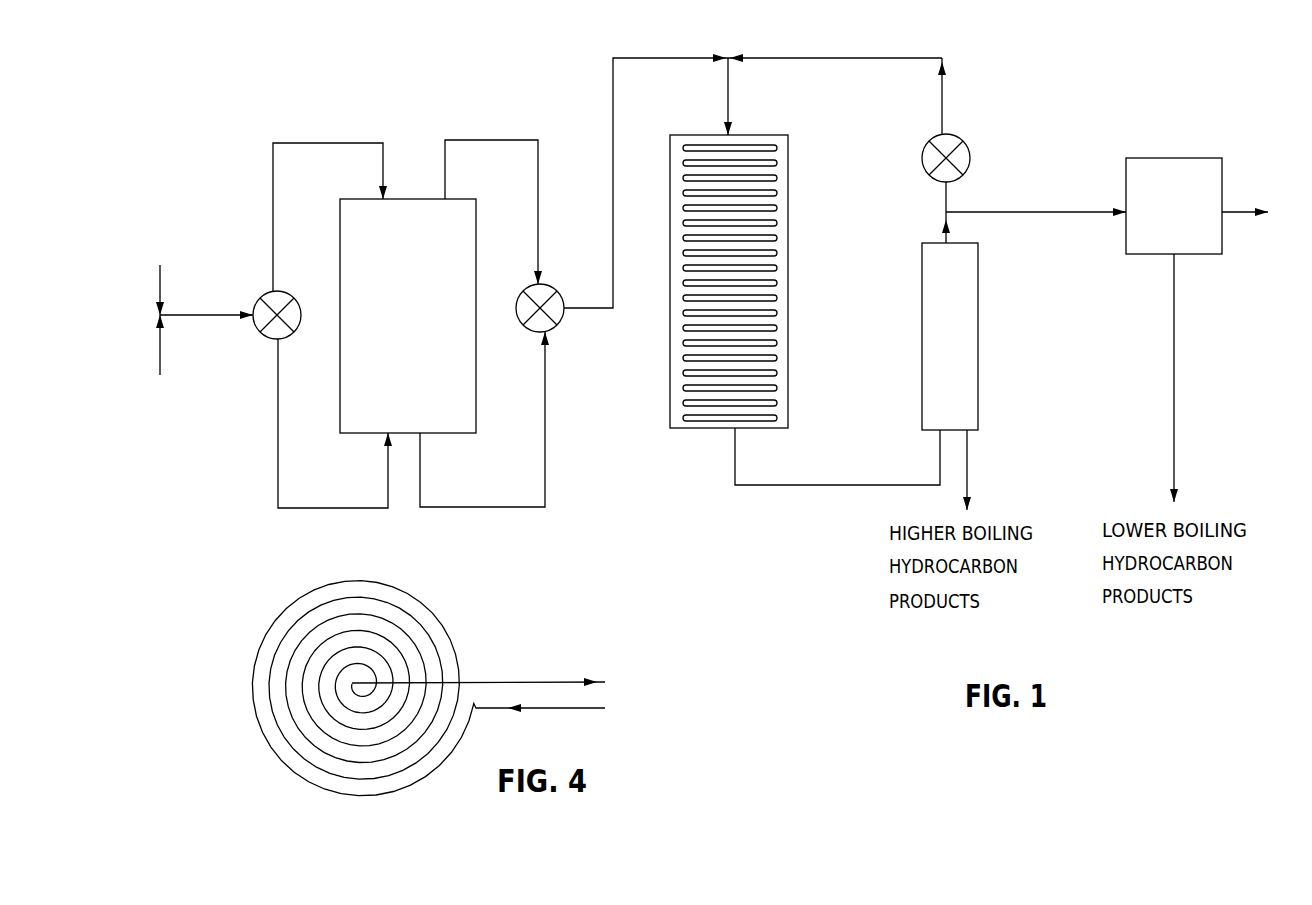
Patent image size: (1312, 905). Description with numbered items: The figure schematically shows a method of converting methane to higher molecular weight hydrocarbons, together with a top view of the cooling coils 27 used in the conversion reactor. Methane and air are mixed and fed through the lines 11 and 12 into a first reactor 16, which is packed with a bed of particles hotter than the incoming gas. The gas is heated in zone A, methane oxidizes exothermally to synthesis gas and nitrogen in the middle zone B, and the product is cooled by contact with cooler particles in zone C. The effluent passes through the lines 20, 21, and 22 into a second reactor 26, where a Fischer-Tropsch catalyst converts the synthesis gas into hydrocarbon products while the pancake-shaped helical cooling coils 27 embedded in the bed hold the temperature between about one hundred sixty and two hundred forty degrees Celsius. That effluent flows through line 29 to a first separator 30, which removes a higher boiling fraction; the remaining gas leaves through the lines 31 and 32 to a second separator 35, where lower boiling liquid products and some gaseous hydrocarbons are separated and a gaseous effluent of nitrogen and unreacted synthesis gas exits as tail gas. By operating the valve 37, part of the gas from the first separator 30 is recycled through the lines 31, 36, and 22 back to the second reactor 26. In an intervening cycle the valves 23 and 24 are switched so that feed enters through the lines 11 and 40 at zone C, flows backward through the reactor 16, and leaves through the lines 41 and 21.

In FIG. 1, the line 11 is at (213, 314).
In FIG. 1, the line 12 is at (343, 508).
In FIG. 1, the first reactor 16 is at (478, 385).
In FIG. 1, the line 20 is at (506, 140).
In FIG. 1, the line 21 is at (598, 330).
In FIG. 1, the line 22 is at (728, 95).
In FIG. 1, the valve 23 is at (262, 292).
In FIG. 1, the valve 24 is at (553, 290).
In FIG. 1, the second reactor 26 is at (792, 313).
In FIG. 1, the cooling coils 27 is at (773, 178).
In FIG. 4, the cooling coils 27 is at (252, 712).
In FIG. 1, the line 29 is at (808, 486).
In FIG. 1, the first separator 30 is at (980, 332).
In FIG. 1, the line 31 is at (950, 235).
In FIG. 1, the line 32 is at (1026, 212).
In FIG. 1, the second separator 35 is at (1145, 158).
In FIG. 1, the line 36 is at (913, 58).
In FIG. 1, the valve 37 is at (962, 143).
In FIG. 1, the line 40 is at (312, 143).
In FIG. 1, the line 41 is at (485, 507).